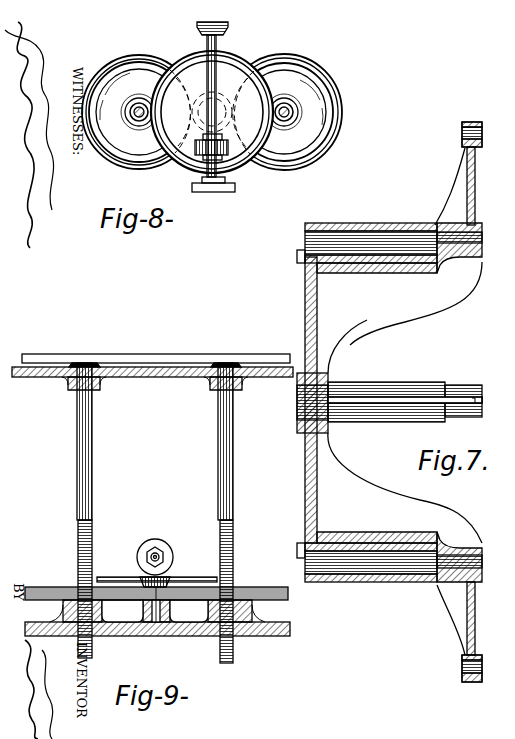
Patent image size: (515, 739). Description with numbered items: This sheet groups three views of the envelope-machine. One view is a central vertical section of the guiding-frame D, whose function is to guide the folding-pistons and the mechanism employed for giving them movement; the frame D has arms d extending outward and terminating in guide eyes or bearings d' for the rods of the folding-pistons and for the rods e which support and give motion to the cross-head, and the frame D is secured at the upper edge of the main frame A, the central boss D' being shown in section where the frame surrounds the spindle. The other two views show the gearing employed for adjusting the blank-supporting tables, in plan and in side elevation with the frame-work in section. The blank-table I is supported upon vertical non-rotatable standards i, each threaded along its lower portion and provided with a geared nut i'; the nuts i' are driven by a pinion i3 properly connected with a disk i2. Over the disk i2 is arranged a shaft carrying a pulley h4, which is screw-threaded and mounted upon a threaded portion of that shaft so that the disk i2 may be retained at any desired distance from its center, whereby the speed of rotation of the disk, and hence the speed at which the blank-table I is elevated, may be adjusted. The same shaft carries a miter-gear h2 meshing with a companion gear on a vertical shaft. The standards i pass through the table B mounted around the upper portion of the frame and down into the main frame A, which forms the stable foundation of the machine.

In FIG. 8, the geared nut i' is at (214, 112).
In FIG. 9, the geared nut i' is at (156, 585).
In FIG. 9, the vertical non-rotatable standard i is at (161, 513).
In FIG. 8, the disk i2 is at (186, 98).
In FIG. 9, the disk i2 is at (181, 577).
In FIG. 8, the pinion i3 is at (236, 62).
In FIG. 9, the pinion i3 is at (166, 555).
In FIG. 8, the miter-gear h2 is at (223, 26).
In FIG. 8, the pulley h4 is at (206, 47).
In FIG. 9, the pulley h4 is at (145, 545).
In FIG. 9, the blank-table I is at (126, 355).
In FIG. 9, the table B is at (38, 378).
In FIG. 9, the main frame A is at (157, 628).
In FIG. 7, the guiding-frame D is at (389, 401).
In FIG. 7, the hub boss D' is at (329, 412).
In FIG. 7, the arm d is at (484, 401).
In FIG. 7, the guide eye or bearing d' is at (484, 402).
In FIG. 7, the rod e is at (478, 413).